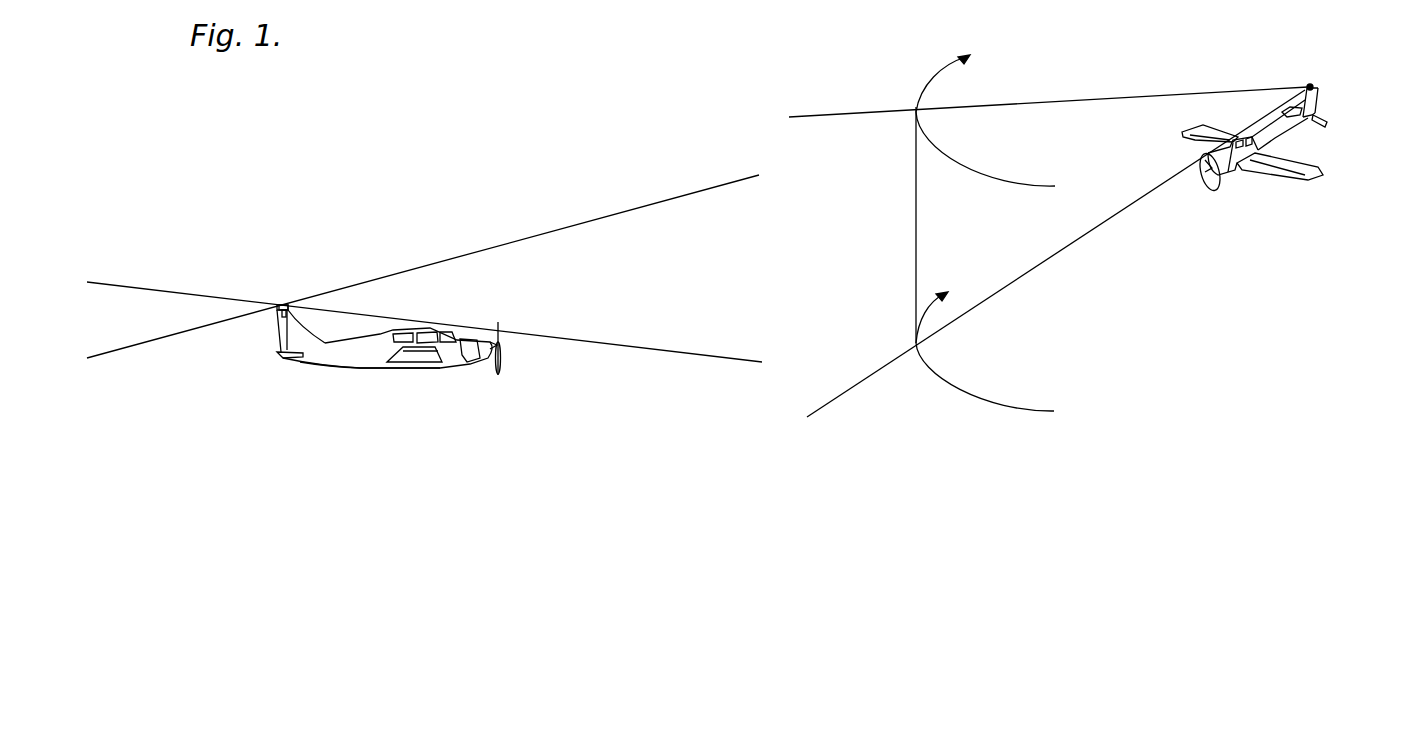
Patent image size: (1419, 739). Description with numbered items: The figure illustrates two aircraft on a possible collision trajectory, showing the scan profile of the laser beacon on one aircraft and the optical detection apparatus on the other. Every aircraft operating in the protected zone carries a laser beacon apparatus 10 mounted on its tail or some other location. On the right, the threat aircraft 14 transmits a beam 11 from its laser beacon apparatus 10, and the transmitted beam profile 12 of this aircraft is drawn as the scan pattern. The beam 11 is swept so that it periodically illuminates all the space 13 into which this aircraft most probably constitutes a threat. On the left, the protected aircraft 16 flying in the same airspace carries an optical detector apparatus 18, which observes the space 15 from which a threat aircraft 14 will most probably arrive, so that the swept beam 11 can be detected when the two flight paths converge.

The laser beacon apparatus 10 is at (278, 305).
The beam 11 is at (1043, 263).
The transmitted beam profile 12 is at (916, 210).
The space 13 is at (1115, 174).
The aircraft 14 is at (1305, 132).
The space 15 is at (161, 329).
The protected aircraft 16 is at (363, 368).
The optical detector apparatus 18 is at (282, 305).